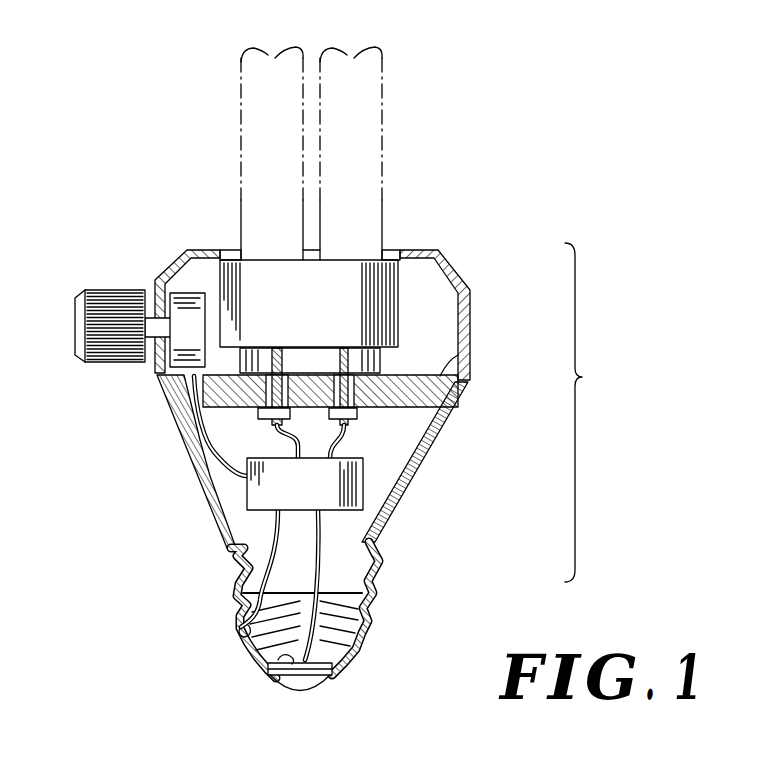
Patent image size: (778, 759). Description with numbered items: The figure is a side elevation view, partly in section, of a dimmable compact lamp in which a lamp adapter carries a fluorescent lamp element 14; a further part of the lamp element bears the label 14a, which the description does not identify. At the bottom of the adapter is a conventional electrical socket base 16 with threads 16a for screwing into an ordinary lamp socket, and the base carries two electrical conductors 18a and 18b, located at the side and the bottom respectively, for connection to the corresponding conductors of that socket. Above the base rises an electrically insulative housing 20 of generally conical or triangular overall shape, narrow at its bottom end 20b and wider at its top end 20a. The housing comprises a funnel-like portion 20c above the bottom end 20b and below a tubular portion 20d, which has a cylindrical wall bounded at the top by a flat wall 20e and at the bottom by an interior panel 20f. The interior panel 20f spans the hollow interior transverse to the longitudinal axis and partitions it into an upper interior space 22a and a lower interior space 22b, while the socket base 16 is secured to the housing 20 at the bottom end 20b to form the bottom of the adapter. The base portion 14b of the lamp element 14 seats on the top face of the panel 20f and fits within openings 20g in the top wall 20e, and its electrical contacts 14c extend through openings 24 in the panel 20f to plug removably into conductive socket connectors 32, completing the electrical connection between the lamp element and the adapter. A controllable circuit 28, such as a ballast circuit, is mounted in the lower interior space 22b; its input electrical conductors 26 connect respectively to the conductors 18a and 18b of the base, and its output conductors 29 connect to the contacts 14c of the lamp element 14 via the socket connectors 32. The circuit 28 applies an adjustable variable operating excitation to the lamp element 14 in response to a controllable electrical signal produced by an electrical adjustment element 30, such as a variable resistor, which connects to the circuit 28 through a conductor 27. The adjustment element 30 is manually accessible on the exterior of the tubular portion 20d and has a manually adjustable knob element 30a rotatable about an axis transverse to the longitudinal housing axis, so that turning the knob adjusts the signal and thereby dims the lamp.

The fluorescent lamp element 14 is at (320, 296).
The lamp tubes 14a is at (373, 113).
The base portion 14b is at (263, 360).
The electrical contacts 14c is at (306, 372).
The electrical socket base 16 is at (358, 656).
The threads 16a is at (362, 614).
The electrical conductor 18a is at (234, 627).
The electrical conductor 18b is at (313, 698).
The electrically insulative housing 20 is at (588, 412).
The top end 20a is at (187, 250).
The bottom end 20b is at (230, 566).
The funnel-like portion 20c is at (420, 472).
The tubular portion 20d is at (458, 392).
The flat wall 20e is at (417, 252).
The interior panel 20f is at (458, 355).
The openings 20g is at (240, 250).
The upper interior space 22a is at (470, 300).
The lower interior space 22b is at (378, 489).
The openings 24 is at (280, 347).
The input electrical conductors 26 is at (310, 537).
The conductor 27 is at (204, 472).
The controllable circuit 28 is at (318, 497).
The output conductors 29 is at (293, 432).
The electrical adjustment element 30 is at (197, 342).
The knob element 30a is at (78, 300).
The socket connectors 32 is at (355, 424).